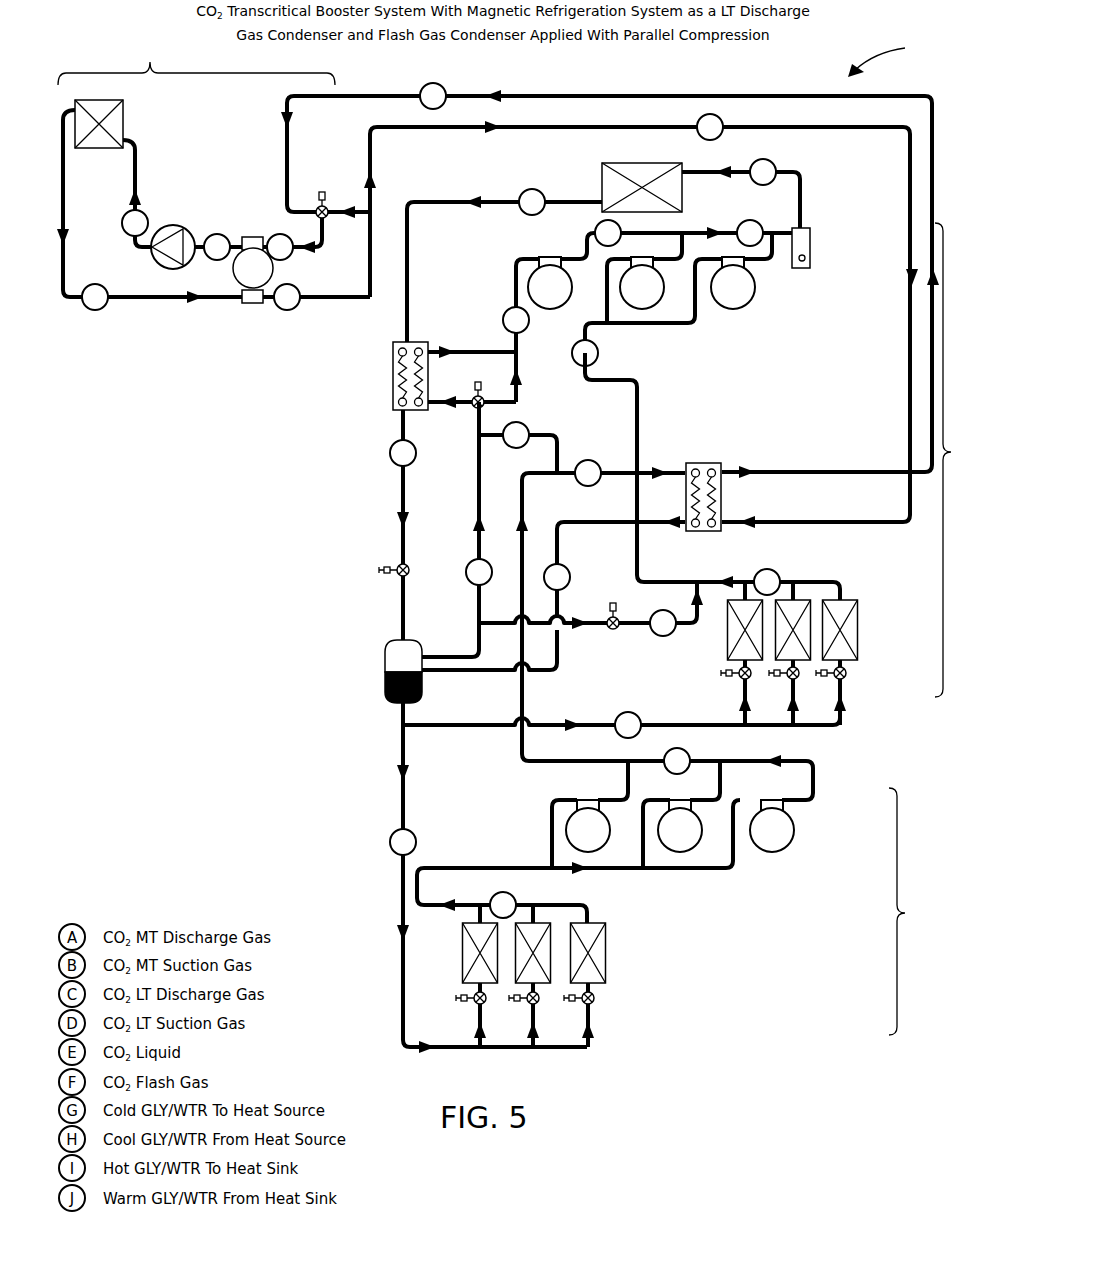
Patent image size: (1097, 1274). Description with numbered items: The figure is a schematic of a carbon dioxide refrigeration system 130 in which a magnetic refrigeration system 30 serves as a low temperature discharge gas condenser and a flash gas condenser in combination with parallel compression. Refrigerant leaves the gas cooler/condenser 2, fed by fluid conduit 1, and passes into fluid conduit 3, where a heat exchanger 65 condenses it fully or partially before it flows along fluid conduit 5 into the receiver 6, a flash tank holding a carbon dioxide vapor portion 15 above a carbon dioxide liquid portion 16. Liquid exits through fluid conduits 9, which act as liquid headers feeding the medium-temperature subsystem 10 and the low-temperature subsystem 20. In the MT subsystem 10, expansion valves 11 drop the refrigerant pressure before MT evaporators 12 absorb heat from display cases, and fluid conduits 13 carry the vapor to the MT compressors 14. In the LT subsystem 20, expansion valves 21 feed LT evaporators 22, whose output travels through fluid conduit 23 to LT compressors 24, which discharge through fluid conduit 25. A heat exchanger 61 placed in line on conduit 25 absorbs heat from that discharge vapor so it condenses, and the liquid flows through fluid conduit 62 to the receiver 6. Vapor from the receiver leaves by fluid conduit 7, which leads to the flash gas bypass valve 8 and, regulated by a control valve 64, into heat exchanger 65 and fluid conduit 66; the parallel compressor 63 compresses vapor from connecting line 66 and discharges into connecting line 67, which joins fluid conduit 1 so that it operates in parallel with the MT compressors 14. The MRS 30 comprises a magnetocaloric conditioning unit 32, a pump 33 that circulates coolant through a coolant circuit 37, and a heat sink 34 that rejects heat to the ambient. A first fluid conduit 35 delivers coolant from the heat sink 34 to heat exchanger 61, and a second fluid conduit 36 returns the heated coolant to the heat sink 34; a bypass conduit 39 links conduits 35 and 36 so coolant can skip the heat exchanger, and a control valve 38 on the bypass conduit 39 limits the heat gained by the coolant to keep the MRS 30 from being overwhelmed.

The fluid conduit 1 is at (803, 182).
The gas cooler/condenser 2 is at (685, 195).
The fluid conduit 3 is at (427, 200).
The fluid conduit 5 is at (400, 624).
The receiver 6 is at (354, 671).
The fluid conduit 7 is at (444, 655).
The flash gas bypass valve 8 is at (614, 605).
The fluid conduits 9 is at (455, 728).
The medium-temperature subsystem 10 is at (956, 460).
The expansion valves 11 is at (848, 682).
The MT evaporators 12 is at (852, 600).
The fluid conduits 13 is at (804, 578).
The MT compressors 14 is at (756, 288).
The carbon dioxide vapor portion 15 is at (403, 656).
The carbon dioxide liquid portion 16 is at (403, 687).
The low-temperature subsystem 20 is at (916, 911).
The expansion valves 21 is at (592, 1006).
The LT evaporators 22 is at (595, 922).
The fluid conduit 23 is at (428, 910).
The LT compressors 24 is at (793, 829).
The fluid conduit 25 is at (818, 775).
The magnetic refrigeration system 30 is at (196, 77).
The magnetocaloric conditioning unit 32 is at (235, 272).
The pump 33 is at (158, 238).
The heat sink 34 is at (95, 150).
The first fluid conduit 35 is at (305, 300).
The second fluid conduit 36 is at (268, 236).
The coolant circuit 37 is at (115, 347).
The control valve 38 is at (315, 213).
The bypass conduit 39 is at (361, 222).
The heat exchanger 61 is at (698, 463).
The fluid conduit 62 is at (605, 527).
The parallel compressor 63 is at (551, 310).
The control valve 64 is at (471, 409).
The heat exchanger 65 is at (414, 343).
The fluid conduit 66 is at (522, 392).
The connecting line 67 is at (592, 254).
The carbon dioxide refrigeration system 130 is at (893, 56).